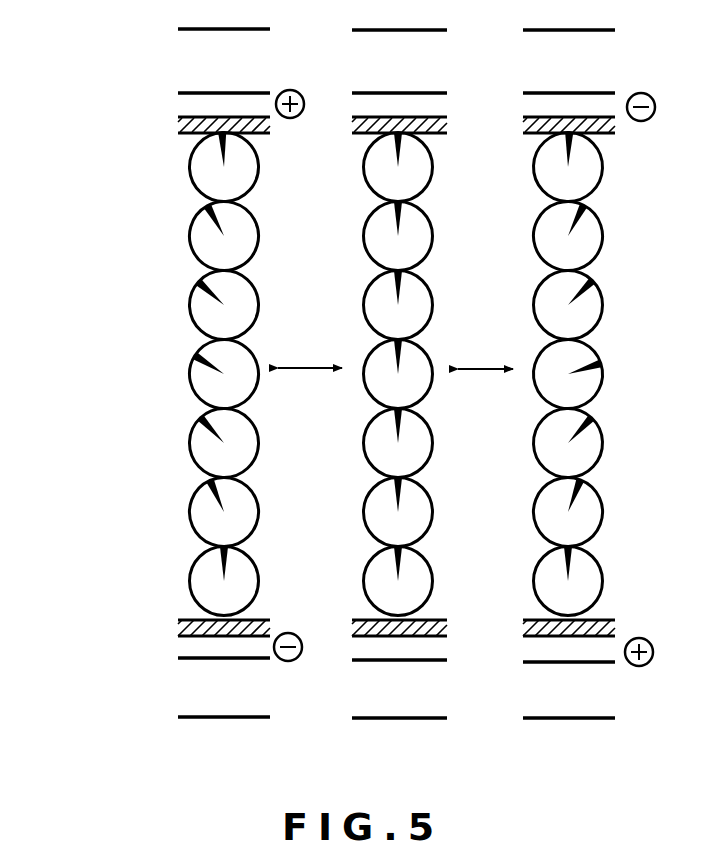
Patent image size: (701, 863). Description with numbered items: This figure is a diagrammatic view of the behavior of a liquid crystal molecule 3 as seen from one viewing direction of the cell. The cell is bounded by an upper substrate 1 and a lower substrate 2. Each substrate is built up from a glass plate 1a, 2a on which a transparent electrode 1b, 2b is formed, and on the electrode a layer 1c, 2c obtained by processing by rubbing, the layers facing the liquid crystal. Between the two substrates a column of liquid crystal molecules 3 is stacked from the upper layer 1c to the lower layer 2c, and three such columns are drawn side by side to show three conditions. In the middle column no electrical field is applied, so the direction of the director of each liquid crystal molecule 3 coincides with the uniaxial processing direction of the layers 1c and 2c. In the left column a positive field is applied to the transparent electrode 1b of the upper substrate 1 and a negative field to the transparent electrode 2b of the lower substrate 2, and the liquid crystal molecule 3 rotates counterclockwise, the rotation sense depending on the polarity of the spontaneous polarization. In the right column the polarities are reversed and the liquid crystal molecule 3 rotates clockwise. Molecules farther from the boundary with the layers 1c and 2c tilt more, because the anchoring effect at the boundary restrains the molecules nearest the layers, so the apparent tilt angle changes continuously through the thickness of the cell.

The substrate 1 is at (105, 46).
The glass plate 1a is at (195, 53).
The transparent electrode 1b is at (190, 98).
The layer 1c is at (183, 124).
The substrate 2 is at (80, 600).
The glass plate 2a is at (185, 688).
The transparent electrode 2b is at (183, 645).
The layer 2c is at (178, 627).
The liquid crystal molecule 3 is at (222, 155).